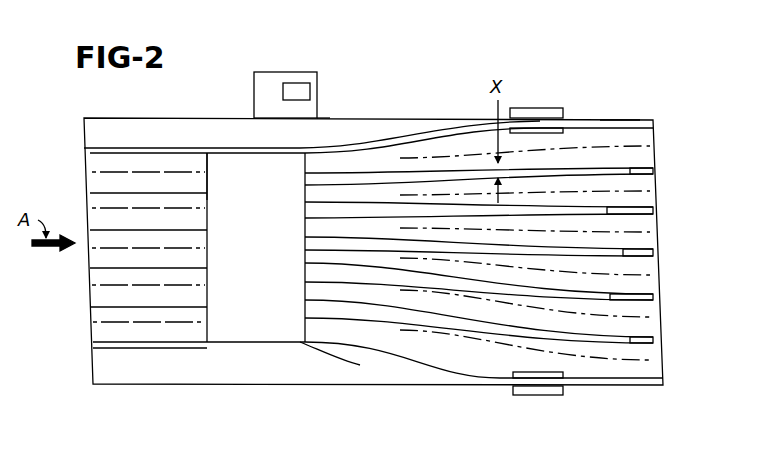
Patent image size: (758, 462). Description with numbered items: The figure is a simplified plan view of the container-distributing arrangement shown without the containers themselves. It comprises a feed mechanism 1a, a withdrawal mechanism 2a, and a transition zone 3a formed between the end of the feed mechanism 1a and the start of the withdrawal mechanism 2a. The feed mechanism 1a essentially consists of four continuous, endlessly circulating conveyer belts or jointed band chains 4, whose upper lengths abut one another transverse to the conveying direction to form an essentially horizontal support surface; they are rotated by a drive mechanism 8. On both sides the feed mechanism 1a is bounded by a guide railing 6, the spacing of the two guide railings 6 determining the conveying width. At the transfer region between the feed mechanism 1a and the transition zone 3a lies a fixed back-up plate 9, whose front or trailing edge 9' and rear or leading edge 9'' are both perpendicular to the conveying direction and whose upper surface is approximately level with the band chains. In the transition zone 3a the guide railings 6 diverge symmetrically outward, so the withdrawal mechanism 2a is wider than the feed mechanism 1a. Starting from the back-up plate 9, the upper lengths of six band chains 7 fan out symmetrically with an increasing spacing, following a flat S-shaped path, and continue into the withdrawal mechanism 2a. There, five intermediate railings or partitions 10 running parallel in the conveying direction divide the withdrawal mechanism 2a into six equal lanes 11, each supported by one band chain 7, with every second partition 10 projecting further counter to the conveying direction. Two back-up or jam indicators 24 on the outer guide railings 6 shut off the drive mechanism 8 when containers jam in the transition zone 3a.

The feed mechanism 1a is at (126, 394).
The withdrawal mechanism 2a is at (602, 92).
The transition zone 3a is at (341, 104).
The conveyer belts or jointed band chains 4 is at (95, 202).
The guide railing 6 is at (128, 147).
The conveyer belts or joined band chains 7 is at (312, 230).
The drive mechanism 8 is at (254, 73).
The back-up plate 9 is at (267, 283).
The front or trailing edge 9' is at (214, 144).
The rear or leading edge 9'' is at (320, 378).
The intermediate railings or partitions 10 is at (652, 172).
The lanes 11 is at (658, 146).
The back-up or jam indicators 24 is at (533, 106).